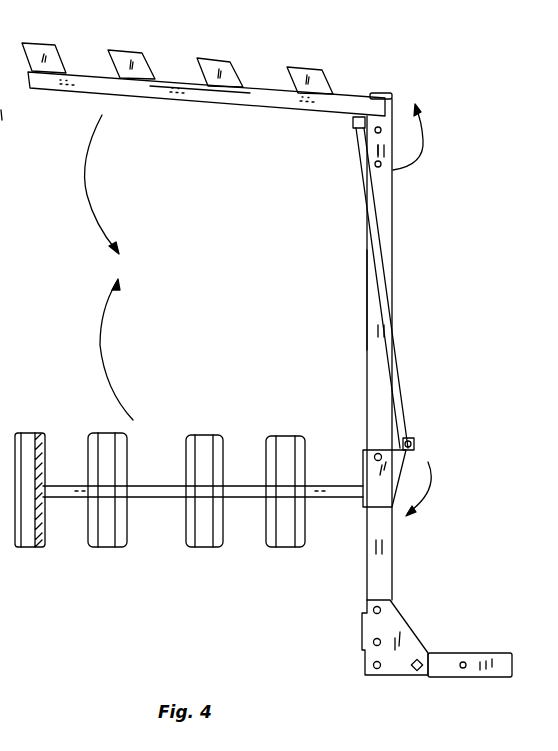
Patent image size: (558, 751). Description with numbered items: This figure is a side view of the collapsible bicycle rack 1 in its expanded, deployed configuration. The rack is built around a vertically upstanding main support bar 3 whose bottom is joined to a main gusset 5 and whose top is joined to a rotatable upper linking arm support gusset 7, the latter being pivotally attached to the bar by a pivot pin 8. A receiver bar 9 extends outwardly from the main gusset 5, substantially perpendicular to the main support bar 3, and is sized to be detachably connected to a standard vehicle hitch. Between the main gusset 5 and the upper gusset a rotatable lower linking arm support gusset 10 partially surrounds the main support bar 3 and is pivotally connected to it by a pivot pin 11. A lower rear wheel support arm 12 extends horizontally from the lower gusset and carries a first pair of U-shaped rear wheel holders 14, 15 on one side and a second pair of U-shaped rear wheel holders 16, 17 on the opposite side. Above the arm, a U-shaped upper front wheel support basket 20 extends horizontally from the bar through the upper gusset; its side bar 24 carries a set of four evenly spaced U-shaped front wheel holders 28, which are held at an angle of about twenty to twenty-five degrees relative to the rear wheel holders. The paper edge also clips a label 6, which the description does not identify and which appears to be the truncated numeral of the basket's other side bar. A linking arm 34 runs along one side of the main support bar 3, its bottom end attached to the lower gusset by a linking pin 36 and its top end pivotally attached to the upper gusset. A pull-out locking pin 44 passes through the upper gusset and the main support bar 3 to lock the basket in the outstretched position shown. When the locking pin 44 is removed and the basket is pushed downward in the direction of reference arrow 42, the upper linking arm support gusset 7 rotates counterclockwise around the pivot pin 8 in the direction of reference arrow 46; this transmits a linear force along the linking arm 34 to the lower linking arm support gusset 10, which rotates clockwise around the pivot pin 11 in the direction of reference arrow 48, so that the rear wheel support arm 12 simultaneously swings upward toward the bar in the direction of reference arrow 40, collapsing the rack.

The collapsible bicycle rack 1 is at (396, 237).
The main support bar 3 is at (367, 298).
The main gusset 5 is at (362, 630).
The partially shown element 6 is at (3, 130).
The upper linking arm support gusset 7 is at (370, 140).
The pivot pin 8 is at (353, 125).
The receiver bar 9 is at (455, 653).
The lower linking arm support gusset 10 is at (363, 500).
The pivot pin 11 is at (374, 450).
The lower rear wheel support arm 12 is at (157, 497).
The U-shaped rear wheel holder 14 is at (107, 547).
The U-shaped rear wheel holder 15 is at (282, 547).
The U-shaped rear wheel holder 16 is at (28, 547).
The U-shaped rear wheel holder 17 is at (202, 547).
The upper front wheel support basket 20 is at (271, 78).
The side bar 24 is at (200, 97).
The U-shaped front wheel holders 28 is at (65, 62).
The linking arm 34 is at (380, 283).
The linking pin 36 is at (414, 442).
The reference arrow 40 is at (100, 338).
The reference arrow 42 is at (87, 193).
The pull-out locking pin 44 is at (372, 165).
The reference arrow 46 is at (425, 142).
The reference arrow 48 is at (430, 480).